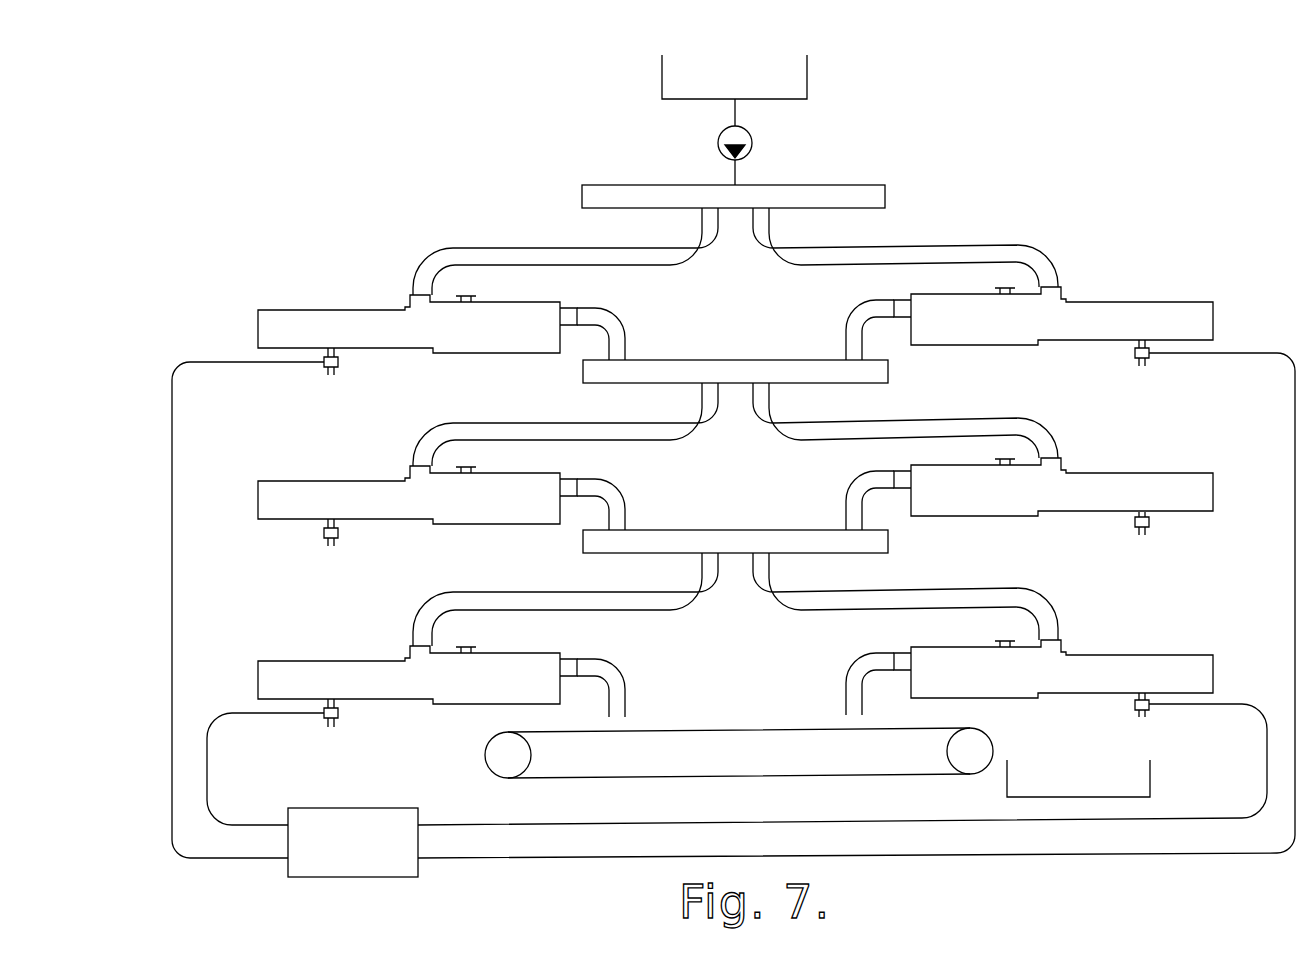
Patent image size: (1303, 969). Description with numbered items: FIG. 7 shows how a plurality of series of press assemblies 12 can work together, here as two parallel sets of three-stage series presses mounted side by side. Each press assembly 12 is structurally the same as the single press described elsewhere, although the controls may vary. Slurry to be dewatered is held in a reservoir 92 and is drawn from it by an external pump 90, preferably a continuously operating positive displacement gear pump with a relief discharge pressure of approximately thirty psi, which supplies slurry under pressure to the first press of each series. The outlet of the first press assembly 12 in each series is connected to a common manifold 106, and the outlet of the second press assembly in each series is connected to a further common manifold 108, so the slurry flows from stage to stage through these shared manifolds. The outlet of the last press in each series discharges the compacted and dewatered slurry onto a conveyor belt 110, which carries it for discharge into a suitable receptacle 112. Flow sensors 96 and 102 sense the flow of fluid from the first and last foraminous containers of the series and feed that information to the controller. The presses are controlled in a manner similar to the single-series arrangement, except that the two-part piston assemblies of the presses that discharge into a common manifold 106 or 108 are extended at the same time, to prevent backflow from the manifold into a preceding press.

The press assembly 12 is at (261, 280).
The pump 90 is at (718, 143).
The reservoir 92 is at (807, 73).
The flow sensor 96 is at (322, 367).
The flow sensor 102 is at (325, 718).
The common manifold 106 is at (680, 359).
The further common manifold 108 is at (683, 529).
The conveyor belt 110 is at (620, 781).
The receptacle 112 is at (1005, 785).